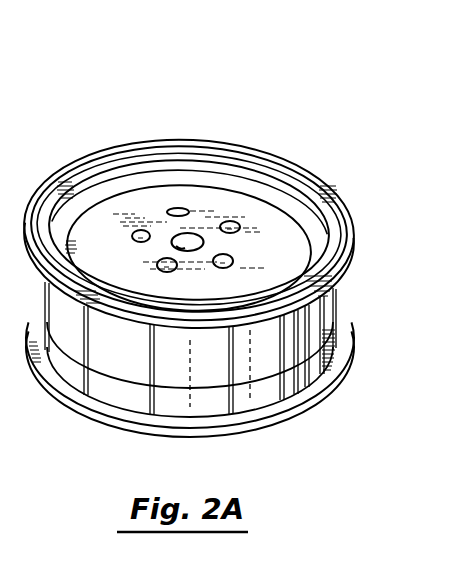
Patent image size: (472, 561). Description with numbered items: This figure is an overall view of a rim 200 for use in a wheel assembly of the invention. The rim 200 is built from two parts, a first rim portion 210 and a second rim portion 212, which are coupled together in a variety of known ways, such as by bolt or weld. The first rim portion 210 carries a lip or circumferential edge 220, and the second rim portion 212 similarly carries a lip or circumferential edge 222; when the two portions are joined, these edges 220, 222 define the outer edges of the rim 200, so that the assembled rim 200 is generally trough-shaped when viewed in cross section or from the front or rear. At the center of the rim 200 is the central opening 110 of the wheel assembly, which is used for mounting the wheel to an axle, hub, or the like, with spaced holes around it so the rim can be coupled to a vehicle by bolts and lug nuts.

The rim 200 is at (278, 130).
The central opening 110 is at (187, 238).
The lip or circumferential edge 220 is at (348, 217).
The first rim portion 210 is at (349, 300).
The second rim portion 212 is at (314, 360).
The lip or circumferential edge 222 is at (322, 393).